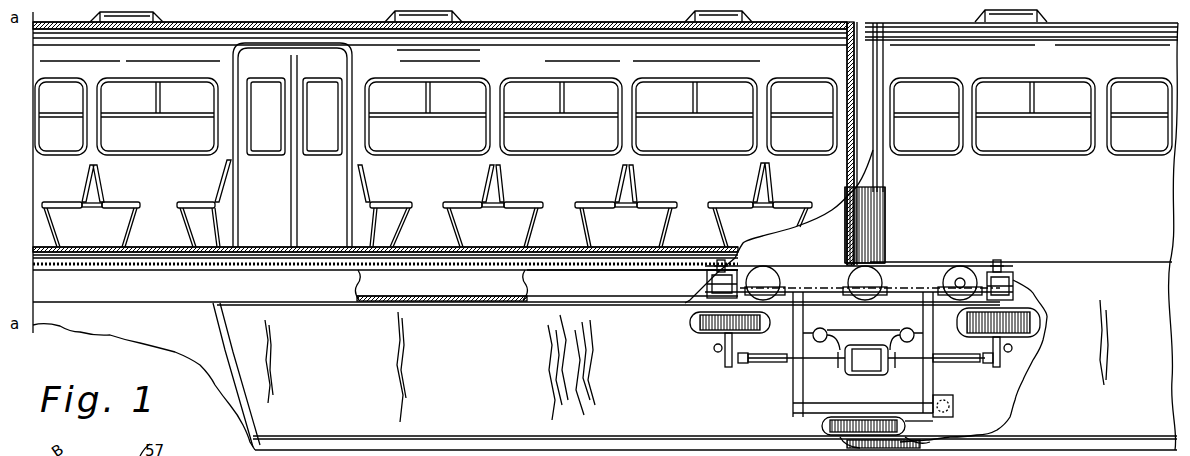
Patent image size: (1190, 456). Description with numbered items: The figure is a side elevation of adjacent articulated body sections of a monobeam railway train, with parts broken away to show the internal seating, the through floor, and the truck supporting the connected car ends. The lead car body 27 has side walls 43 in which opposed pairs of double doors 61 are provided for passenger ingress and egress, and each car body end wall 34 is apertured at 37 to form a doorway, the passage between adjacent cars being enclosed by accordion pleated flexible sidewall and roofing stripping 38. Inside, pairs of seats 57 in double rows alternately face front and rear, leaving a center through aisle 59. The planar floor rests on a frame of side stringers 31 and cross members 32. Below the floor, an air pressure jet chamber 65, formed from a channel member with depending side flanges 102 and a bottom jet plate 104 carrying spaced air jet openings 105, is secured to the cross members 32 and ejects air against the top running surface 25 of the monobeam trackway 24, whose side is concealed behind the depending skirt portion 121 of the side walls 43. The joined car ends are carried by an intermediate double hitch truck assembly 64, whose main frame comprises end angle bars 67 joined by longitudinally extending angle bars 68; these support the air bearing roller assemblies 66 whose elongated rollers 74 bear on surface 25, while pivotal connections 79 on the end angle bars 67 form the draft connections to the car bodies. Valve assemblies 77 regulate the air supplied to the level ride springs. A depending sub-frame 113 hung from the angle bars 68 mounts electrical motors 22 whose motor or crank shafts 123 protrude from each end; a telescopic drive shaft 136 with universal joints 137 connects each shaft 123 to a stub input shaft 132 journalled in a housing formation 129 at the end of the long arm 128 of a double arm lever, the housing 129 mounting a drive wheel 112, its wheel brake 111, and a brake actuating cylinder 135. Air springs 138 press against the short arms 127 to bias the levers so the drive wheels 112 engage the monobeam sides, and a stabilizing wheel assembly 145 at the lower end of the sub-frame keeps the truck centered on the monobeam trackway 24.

The car body 27 is at (612, 24).
The side walls 43 is at (535, 62).
The double doors 61 is at (340, 60).
The car body end wall 34 is at (847, 50).
The aperture 37 is at (847, 169).
The accordion pleated flexible sidewall and roofing stripping 38 is at (876, 220).
The seats 57 is at (63, 201).
The center through aisle 59 is at (438, 244).
The cross members 32 is at (338, 266).
The side stringers 31 is at (177, 258).
The air pressure jet chamber 65 is at (339, 290).
The air jet openings 105 is at (408, 297).
The depending side flanges 102 is at (512, 286).
The top running surface 25 is at (373, 302).
The bottom jet plate 104 is at (610, 302).
The monobeam trackway 24 is at (533, 376).
The depending skirt portion 121 is at (176, 336).
The longitudinally extending angle bars 68 is at (825, 278).
The elongated roller 74 is at (772, 300).
The air bearing roller assemblies 66 is at (966, 262).
The end angle bars 67 is at (707, 290).
The pivotal connections 79 is at (740, 263).
The telescopic drive shaft 136 is at (796, 393).
The depending sub-frame 113 is at (792, 407).
The inlet and outlet valve assemblies 77 is at (865, 446).
The drive wheels 112 is at (695, 318).
The wheel brakes 111 is at (707, 337).
The brake actuating cylinder 135 is at (718, 348).
The housing formation 129 is at (723, 360).
The stub input shaft 132 is at (742, 368).
The universal joints 137 is at (787, 358).
The long arm 128 is at (967, 345).
The air springs 138 is at (835, 322).
The short arm 127 is at (833, 337).
The motor or crank shaft 123 is at (840, 355).
The electrical motors 22 is at (878, 368).
The intermediate double hitch truck assembly 64 is at (928, 395).
The stabilizing wheel assembly 145 is at (927, 424).